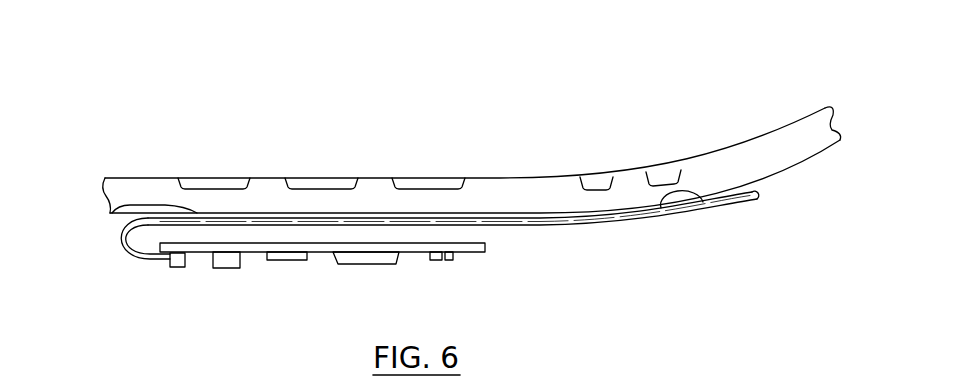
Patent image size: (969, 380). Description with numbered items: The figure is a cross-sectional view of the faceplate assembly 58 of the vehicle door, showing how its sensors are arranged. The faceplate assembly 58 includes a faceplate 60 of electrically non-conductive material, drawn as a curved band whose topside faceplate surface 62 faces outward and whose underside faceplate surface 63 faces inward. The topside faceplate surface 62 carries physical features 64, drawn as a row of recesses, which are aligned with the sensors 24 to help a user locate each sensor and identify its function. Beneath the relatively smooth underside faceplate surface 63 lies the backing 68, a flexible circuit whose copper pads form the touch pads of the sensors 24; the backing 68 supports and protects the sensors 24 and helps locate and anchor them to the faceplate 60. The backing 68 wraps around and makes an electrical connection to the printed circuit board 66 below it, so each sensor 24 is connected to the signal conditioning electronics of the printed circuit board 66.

The sensor 24 is at (115, 215).
The faceplate assembly 58 is at (485, 136).
The faceplate 60 is at (732, 155).
The topside faceplate surface 62 is at (800, 118).
The underside faceplate surface 63 is at (783, 173).
The physical features 64 is at (228, 183).
The printed circuit board 66 is at (322, 252).
The backing 68 is at (552, 223).